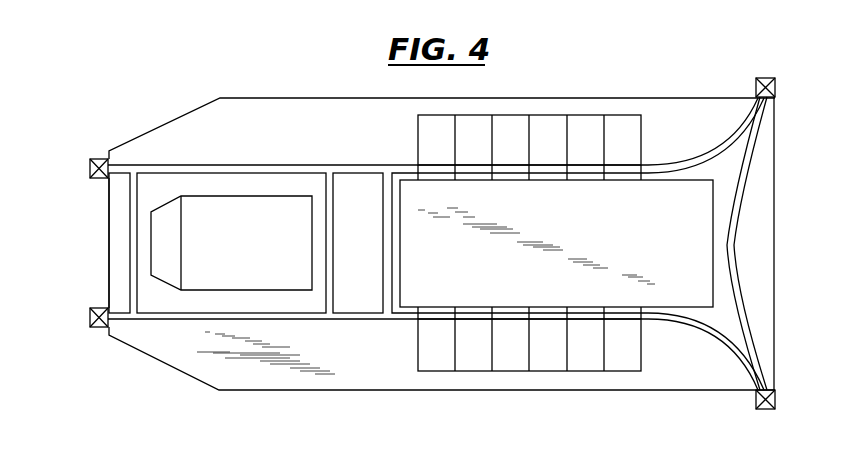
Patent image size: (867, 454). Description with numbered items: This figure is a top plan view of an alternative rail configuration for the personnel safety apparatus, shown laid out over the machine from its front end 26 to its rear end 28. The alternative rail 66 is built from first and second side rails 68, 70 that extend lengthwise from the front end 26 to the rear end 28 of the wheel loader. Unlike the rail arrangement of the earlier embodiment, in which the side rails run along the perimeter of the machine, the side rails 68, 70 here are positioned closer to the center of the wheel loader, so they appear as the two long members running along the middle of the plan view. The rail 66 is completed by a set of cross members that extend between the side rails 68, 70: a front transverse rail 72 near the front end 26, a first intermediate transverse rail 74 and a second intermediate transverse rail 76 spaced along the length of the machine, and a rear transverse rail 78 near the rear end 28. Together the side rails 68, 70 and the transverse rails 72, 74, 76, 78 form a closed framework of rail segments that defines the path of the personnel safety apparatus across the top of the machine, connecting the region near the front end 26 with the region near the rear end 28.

The front end 26 is at (110, 287).
The rear end 28 is at (774, 263).
The rail 66 is at (264, 152).
The first side rail 68 is at (354, 321).
The second side rail 70 is at (347, 163).
The front transverse rail 72 is at (132, 200).
The first intermediate transverse rail 74 is at (335, 238).
The second intermediate transverse rail 76 is at (388, 263).
The rear transverse rail 78 is at (748, 160).